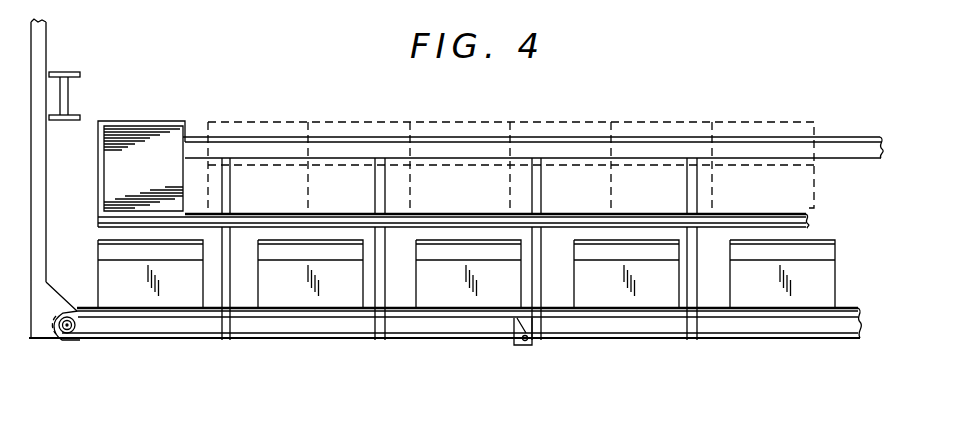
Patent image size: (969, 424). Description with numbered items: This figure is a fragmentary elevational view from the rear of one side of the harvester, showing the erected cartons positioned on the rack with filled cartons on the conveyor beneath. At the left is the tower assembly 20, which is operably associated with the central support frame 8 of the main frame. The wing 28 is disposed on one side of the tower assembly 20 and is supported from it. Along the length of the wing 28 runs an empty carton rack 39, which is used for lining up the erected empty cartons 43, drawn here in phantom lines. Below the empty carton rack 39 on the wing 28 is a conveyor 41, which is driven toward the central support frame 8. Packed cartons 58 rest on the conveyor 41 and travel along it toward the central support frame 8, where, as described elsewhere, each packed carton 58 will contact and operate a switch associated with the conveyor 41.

The tower assembly 20 is at (49, 42).
The central support frame 8 is at (77, 102).
The erected empty cartons 43 is at (598, 123).
The empty carton rack 39 is at (836, 137).
The packed carton 58 is at (818, 263).
The conveyor 41 is at (847, 303).
The wing 28 is at (492, 338).